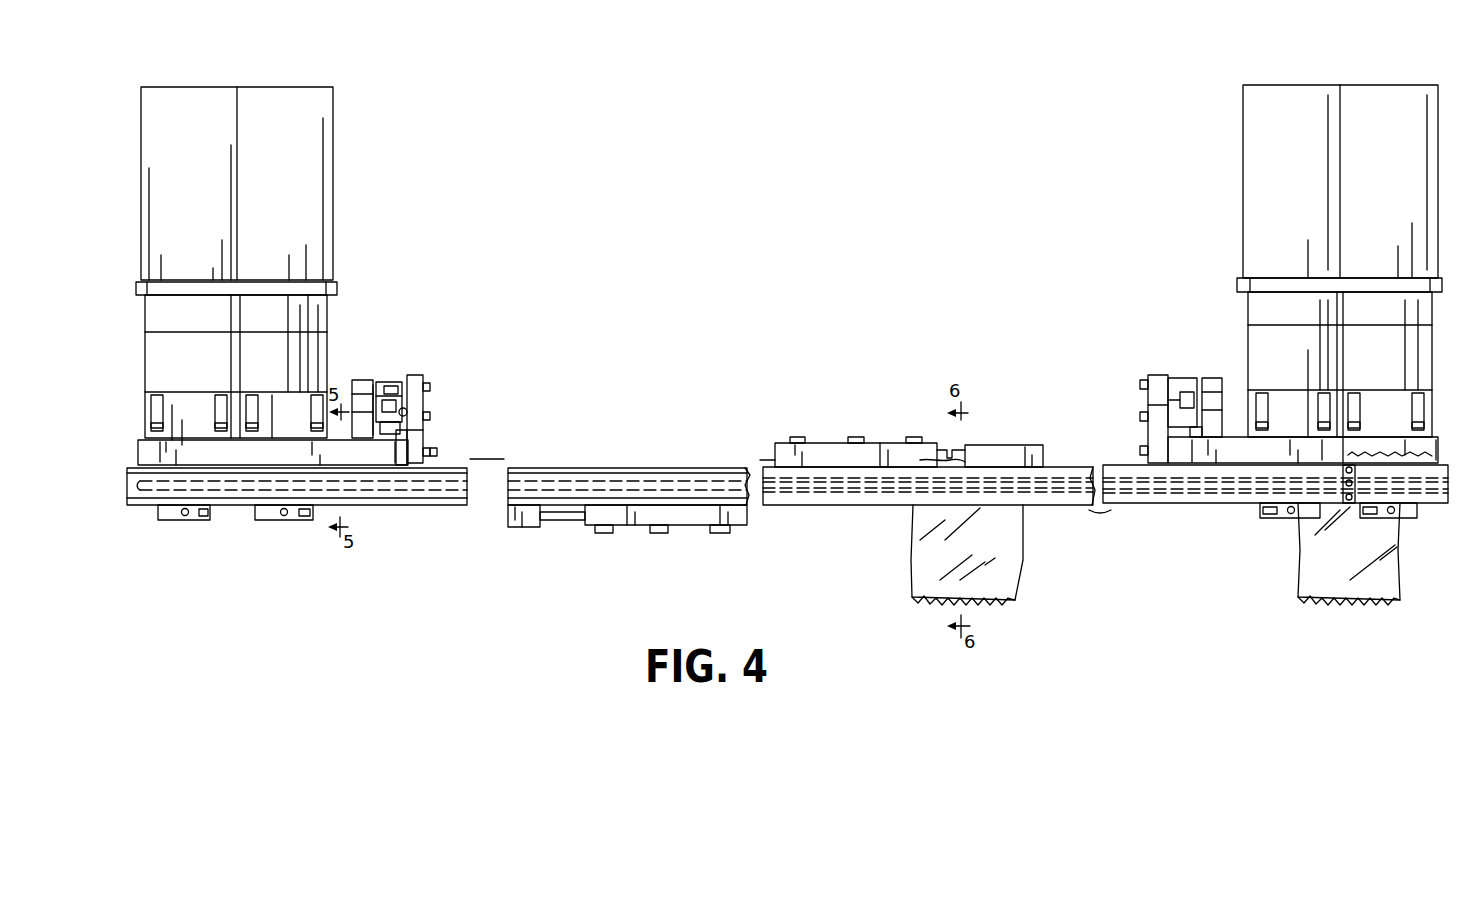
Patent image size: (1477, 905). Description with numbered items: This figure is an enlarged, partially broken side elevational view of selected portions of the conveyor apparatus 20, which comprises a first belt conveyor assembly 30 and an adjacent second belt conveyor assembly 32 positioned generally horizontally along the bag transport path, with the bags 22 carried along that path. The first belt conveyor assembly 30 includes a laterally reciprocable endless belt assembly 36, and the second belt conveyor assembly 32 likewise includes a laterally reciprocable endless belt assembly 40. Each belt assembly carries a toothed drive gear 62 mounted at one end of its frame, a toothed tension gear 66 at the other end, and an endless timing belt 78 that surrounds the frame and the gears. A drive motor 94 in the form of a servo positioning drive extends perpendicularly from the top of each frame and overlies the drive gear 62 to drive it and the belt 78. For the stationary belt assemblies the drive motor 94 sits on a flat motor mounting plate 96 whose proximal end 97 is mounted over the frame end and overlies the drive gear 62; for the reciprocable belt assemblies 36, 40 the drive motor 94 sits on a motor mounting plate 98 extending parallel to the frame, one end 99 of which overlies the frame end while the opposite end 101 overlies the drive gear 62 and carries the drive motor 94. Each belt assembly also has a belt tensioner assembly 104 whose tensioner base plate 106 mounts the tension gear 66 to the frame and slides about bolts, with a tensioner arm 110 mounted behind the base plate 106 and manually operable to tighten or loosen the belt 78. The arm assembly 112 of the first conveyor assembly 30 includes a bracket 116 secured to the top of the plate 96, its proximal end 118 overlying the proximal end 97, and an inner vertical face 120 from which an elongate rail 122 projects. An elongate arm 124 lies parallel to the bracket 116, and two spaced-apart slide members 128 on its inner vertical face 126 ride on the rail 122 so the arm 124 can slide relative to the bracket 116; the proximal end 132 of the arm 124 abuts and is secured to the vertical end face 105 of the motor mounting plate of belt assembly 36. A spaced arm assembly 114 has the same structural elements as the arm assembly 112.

The apparatus 20 is at (752, 328).
The web material 22 is at (1020, 543).
The first belt conveyor assembly 30 is at (556, 550).
The second belt conveyor assembly 32 is at (1097, 540).
The endless belt assembly 36 is at (387, 512).
The endless belt assembly 40 is at (830, 515).
The drive gear 62 is at (228, 470).
The tension gear 66 is at (692, 485).
The endless belt 78 is at (450, 507).
The drive motor 94 is at (141, 101).
The motor mounting plate 96 is at (1443, 436).
The proximal end 97 is at (1425, 451).
The motor mounting plate 98 is at (134, 446).
The end 99 is at (392, 453).
The end 101 is at (167, 455).
The belt tensioner assembly 104 is at (690, 532).
The vertical end face 105 is at (404, 442).
The tensioner base plate 106 is at (626, 527).
The tensioner arm 110 is at (526, 527).
The arm assembly 112 is at (422, 421).
The arm assembly 114 is at (1158, 368).
The bracket 116 is at (365, 386).
The proximal end 118 is at (357, 400).
The inner vertical face 120 is at (378, 398).
The rail 122 is at (416, 395).
The arm 124 is at (392, 406).
The inner vertical face 126 is at (410, 413).
The slide members 128 is at (388, 422).
The proximal end 132 is at (432, 452).